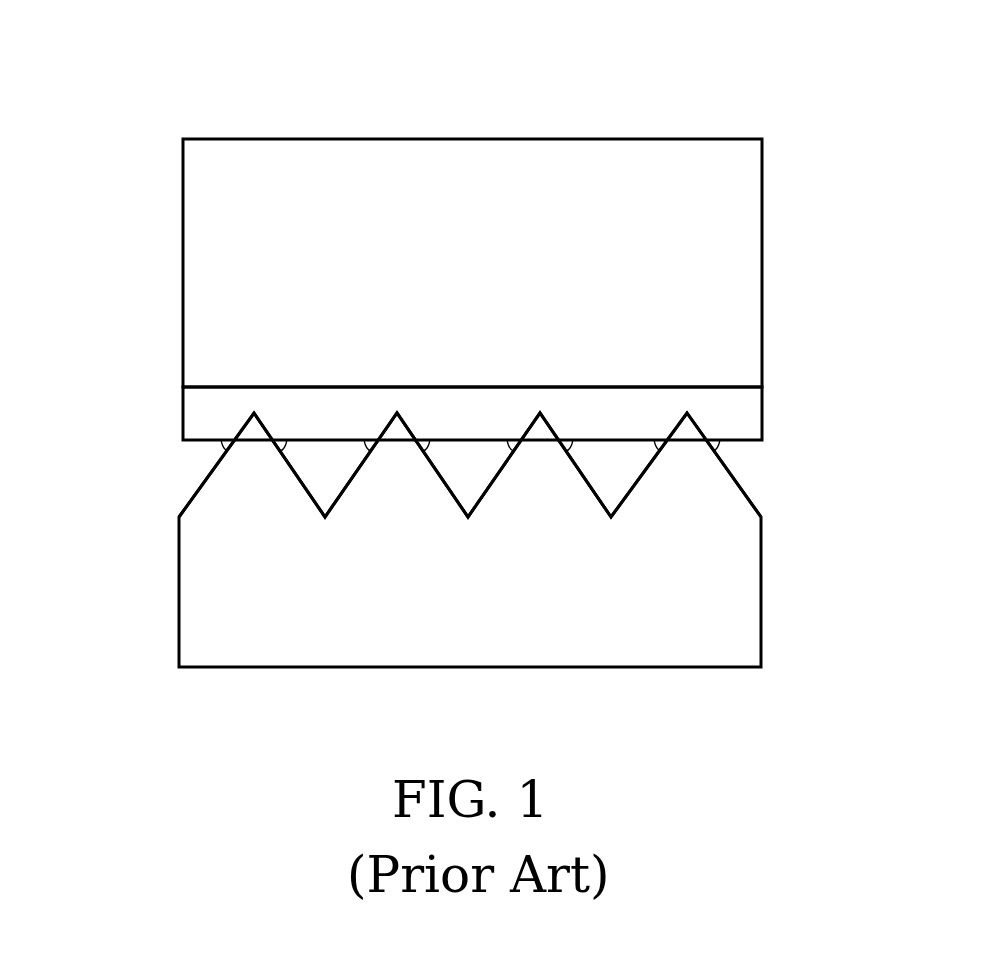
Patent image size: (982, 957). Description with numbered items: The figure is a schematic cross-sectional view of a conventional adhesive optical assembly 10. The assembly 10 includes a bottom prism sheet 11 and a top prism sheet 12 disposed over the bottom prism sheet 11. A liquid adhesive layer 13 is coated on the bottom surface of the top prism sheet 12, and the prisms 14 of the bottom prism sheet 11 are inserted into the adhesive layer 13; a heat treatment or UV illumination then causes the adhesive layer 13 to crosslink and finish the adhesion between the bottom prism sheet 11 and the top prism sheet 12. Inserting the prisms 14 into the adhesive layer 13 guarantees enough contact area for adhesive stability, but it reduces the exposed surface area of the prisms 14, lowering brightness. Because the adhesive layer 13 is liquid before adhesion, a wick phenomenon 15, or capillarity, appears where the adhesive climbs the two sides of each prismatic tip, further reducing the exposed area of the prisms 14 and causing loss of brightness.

The adhesive optical assembly 10 is at (853, 62).
The bottom prism sheet 11 is at (730, 615).
The top prism sheet 12 is at (715, 292).
The adhesive layer 13 is at (745, 422).
The prisms 14 is at (748, 495).
The wick phenomenon 15 is at (223, 445).